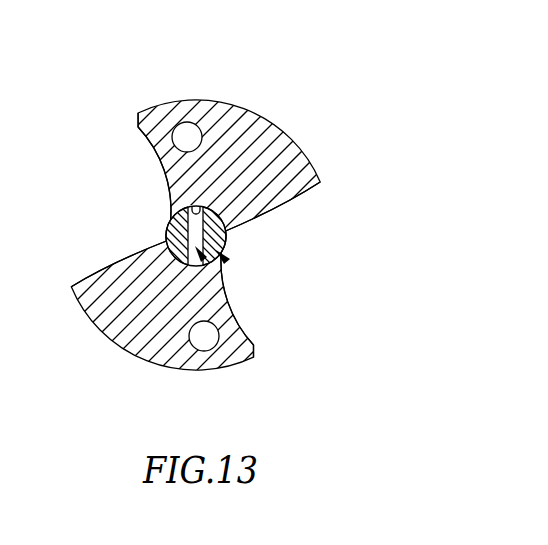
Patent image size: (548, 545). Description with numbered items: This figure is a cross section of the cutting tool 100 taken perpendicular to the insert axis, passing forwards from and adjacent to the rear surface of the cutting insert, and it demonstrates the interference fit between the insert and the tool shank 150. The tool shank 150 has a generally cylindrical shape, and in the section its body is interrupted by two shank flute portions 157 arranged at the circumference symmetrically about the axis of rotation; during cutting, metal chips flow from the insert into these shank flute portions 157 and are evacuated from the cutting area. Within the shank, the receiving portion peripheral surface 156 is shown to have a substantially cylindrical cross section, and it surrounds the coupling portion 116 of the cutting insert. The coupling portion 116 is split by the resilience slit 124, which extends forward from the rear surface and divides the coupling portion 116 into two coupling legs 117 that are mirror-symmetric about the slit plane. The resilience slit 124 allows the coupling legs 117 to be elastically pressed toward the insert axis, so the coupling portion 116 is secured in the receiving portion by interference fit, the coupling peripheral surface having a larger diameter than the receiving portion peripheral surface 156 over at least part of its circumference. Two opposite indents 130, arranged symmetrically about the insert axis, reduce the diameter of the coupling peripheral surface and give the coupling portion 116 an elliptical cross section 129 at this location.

The cutting tool 100 is at (148, 68).
The tool shank 150 is at (294, 88).
The shank flute portions 157 is at (127, 258).
The receiving portion peripheral surface 156 is at (170, 220).
The resilience slit 124 is at (227, 300).
The elliptical cross section 129 is at (166, 232).
The coupling legs 117 is at (166, 236).
The indents 130 is at (210, 207).
The coupling portion 116 is at (227, 261).